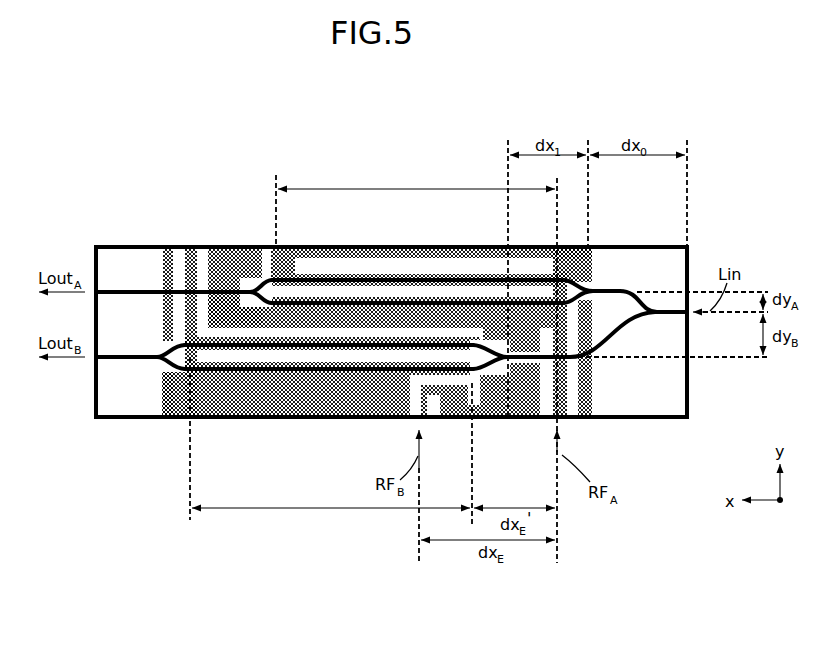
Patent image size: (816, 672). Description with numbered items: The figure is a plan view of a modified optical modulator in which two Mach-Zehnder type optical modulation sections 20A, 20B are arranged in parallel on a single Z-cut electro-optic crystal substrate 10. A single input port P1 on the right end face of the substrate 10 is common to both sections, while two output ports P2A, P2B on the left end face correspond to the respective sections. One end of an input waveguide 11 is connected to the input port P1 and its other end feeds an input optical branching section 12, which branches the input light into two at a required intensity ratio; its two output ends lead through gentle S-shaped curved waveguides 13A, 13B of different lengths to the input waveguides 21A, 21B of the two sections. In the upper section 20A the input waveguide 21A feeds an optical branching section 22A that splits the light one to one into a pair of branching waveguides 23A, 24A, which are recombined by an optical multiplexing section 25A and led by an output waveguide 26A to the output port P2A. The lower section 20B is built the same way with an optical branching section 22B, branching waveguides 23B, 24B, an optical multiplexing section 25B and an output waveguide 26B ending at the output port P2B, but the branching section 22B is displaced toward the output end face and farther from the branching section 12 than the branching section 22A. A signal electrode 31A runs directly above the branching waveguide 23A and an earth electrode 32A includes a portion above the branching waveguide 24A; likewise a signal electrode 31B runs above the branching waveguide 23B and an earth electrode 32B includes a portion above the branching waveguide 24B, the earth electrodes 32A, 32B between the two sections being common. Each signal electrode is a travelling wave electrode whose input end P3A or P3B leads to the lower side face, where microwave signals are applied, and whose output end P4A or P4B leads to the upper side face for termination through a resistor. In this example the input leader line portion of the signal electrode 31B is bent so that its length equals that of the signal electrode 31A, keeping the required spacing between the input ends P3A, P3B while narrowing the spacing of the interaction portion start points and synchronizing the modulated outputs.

The substrate 10 is at (672, 420).
The input waveguide 11 is at (688, 277).
The input optical branching section 12 is at (657, 287).
The curved waveguide 13A is at (632, 287).
The curved waveguide 13B is at (610, 325).
The optical modulation section 20A is at (253, 172).
The optical modulation section 20B is at (173, 472).
The input waveguide 21A is at (610, 288).
The input waveguide 21B is at (510, 362).
The optical branching section 22A is at (592, 277).
The optical branching section 22B is at (507, 362).
The branching waveguide 23A is at (350, 263).
The branching waveguide 23B is at (237, 377).
The branching waveguide 24A is at (310, 290).
The branching waveguide 24B is at (207, 377).
The optical multiplexing section 25A is at (248, 288).
The optical multiplexing section 25B is at (160, 360).
The output waveguide 26A is at (128, 290).
The output waveguide 26B is at (123, 357).
The signal electrode 31A is at (410, 268).
The signal electrode 31B is at (300, 377).
The earth electrode 32A is at (447, 310).
The earth electrode 32B is at (377, 325).
The input port P1 is at (692, 313).
The output port P2A is at (93, 294).
The output port P2B is at (93, 359).
The input end P3A is at (570, 422).
The input end P3B is at (413, 418).
The output end P4A is at (275, 245).
The output end P4B is at (187, 247).